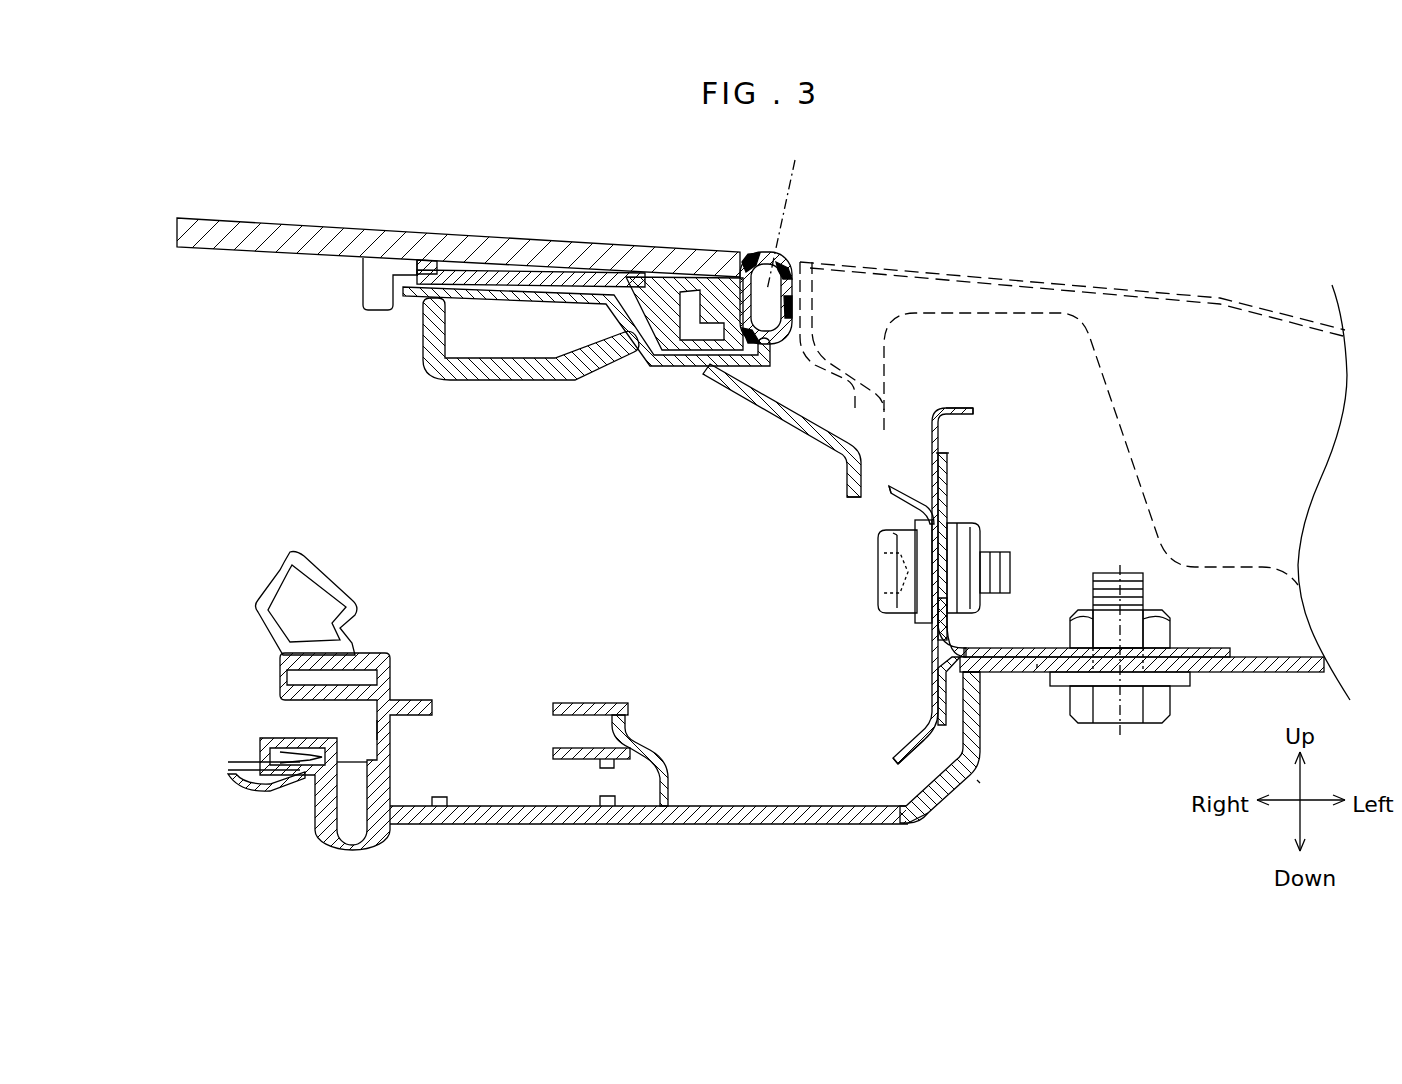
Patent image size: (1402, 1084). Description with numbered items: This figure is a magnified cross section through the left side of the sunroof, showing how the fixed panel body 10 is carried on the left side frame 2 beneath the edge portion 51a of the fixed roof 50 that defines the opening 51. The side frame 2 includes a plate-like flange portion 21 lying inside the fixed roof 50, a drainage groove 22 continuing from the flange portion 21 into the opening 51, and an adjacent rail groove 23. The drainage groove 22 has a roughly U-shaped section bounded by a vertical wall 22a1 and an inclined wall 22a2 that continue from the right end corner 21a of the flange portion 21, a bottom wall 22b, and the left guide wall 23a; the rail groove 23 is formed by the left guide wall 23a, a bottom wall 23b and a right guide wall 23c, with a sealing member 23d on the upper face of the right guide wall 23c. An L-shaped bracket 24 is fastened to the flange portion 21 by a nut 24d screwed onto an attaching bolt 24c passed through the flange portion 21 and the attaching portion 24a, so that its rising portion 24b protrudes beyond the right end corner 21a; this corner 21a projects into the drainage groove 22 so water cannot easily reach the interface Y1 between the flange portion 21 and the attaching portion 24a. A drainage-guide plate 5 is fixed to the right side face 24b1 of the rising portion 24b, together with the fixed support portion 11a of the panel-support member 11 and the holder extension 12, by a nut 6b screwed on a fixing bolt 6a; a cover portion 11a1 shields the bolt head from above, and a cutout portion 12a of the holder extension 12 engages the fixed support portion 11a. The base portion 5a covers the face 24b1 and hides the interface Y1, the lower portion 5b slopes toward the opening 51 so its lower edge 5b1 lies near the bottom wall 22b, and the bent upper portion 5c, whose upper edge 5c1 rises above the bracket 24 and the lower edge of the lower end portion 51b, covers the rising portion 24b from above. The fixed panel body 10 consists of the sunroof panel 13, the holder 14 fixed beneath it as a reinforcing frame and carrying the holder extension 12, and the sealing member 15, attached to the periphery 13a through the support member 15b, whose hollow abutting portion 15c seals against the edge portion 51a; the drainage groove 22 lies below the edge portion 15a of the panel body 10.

The side frame 2 is at (979, 782).
The drainage-guide plate 5 is at (929, 447).
The base portion 5a is at (936, 657).
The lower portion 5b is at (918, 739).
The lower edge 5b1 is at (893, 766).
The upper portion 5c is at (961, 407).
The upper edge 5c1 is at (975, 412).
The fixing bolt 6a is at (879, 606).
The nut 6b is at (958, 536).
The fixed panel body 10 is at (556, 230).
The panel-support member 11 is at (893, 534).
The fixed support portion 11a is at (795, 542).
The cover portion 11a1 is at (887, 493).
The holder extension 12 is at (755, 397).
The cutout portion 12a is at (847, 505).
The sunroof panel 13 is at (435, 260).
The periphery 13a is at (698, 264).
The holder 14 is at (656, 357).
The sealing member 15 is at (750, 248).
The edge portion 15a is at (791, 309).
The support member 15b is at (723, 268).
The abutting portion 15c is at (788, 273).
The flange portion 21 is at (1013, 665).
The right end corner 21a is at (934, 689).
The drainage groove 22 is at (744, 803).
The vertical wall 22a1 is at (976, 778).
The inclined wall 22a2 is at (950, 796).
The bottom wall 22b is at (850, 825).
The rail groove 23 is at (523, 650).
The left guide wall 23a is at (628, 702).
The bottom wall 23b is at (526, 825).
The right guide wall 23c is at (390, 655).
The sealing member 23d is at (339, 563).
The bracket 24 is at (1011, 645).
The attaching portion 24a is at (1223, 648).
The rising portion 24b is at (949, 481).
The right side face 24b1 is at (949, 461).
The attaching bolt 24c is at (1126, 710).
The nut 24d is at (1116, 612).
The fixed roof 50 is at (1141, 290).
The opening 51 is at (248, 320).
The edge portion 51a is at (792, 211).
The lower end portion 51b is at (889, 398).
The interface Y1 is at (1037, 666).